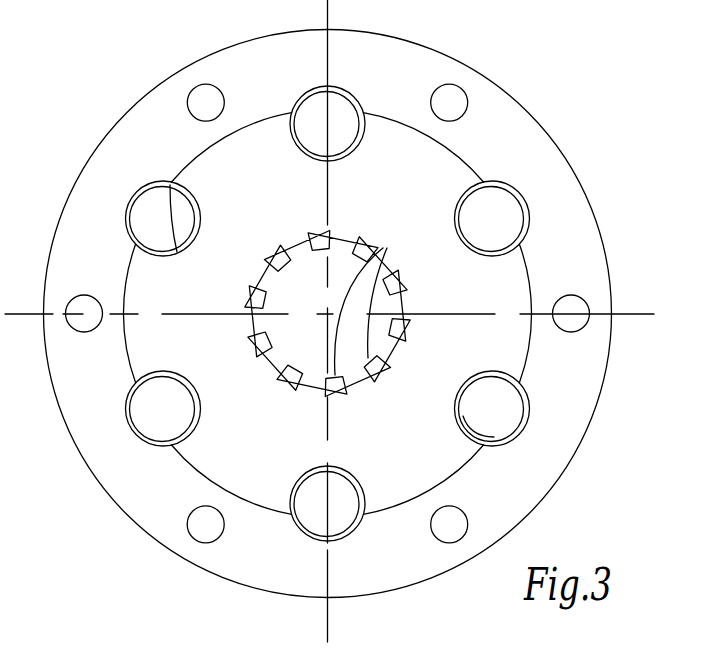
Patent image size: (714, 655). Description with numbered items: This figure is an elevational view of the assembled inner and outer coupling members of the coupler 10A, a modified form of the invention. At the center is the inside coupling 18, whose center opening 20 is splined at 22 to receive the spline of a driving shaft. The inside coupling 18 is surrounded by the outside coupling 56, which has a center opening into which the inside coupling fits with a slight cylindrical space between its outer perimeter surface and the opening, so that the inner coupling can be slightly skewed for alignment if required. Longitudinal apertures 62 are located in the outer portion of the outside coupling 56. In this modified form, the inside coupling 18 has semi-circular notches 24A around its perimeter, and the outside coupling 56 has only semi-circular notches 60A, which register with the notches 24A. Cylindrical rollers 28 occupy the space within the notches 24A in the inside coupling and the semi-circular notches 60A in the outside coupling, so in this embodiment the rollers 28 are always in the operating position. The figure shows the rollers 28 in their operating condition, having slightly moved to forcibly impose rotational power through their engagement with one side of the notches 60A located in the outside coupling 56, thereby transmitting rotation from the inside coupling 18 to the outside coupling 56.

The coupler 10A is at (634, 127).
The inside coupling 18 is at (402, 140).
The center opening 20 is at (310, 287).
The spline 22 is at (383, 248).
The semi-circular notches 24A is at (173, 188).
The cylindrical rollers 28 is at (152, 218).
The outside coupling 56 is at (489, 108).
The semi-circular notches 60A is at (177, 252).
The longitudinal apertures 62 is at (205, 100).